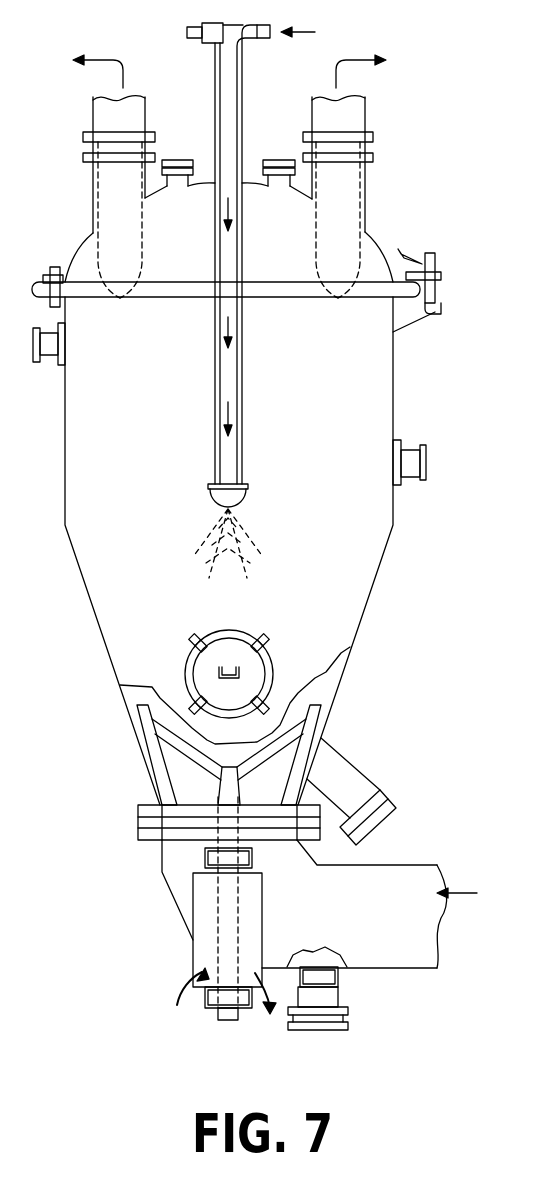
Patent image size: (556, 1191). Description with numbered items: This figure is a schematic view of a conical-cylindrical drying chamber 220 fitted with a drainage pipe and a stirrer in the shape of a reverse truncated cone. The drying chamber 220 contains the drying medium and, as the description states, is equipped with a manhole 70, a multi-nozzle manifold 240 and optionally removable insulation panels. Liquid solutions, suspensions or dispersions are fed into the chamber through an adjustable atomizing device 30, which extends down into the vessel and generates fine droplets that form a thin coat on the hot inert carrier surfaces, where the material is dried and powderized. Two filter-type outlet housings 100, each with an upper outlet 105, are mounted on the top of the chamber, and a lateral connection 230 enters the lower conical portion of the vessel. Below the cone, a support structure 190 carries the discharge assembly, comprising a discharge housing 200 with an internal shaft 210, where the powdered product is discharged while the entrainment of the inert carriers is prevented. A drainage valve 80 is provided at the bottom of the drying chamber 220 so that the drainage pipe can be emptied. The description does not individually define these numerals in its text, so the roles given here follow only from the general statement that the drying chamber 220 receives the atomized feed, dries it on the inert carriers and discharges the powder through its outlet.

The spray lance 30 is at (243, 421).
The sight glass port 70 is at (200, 675).
The drain valve 80 is at (338, 995).
The filter element 100 is at (93, 205).
The filter outlet 105 is at (366, 117).
The support struts 190 is at (163, 772).
The discharge housing 200 is at (207, 858).
The discharge shaft 210 is at (218, 912).
The vessel 220 is at (386, 545).
The side inlet pipe 230 is at (366, 777).
The nozzle port 240 is at (180, 160).